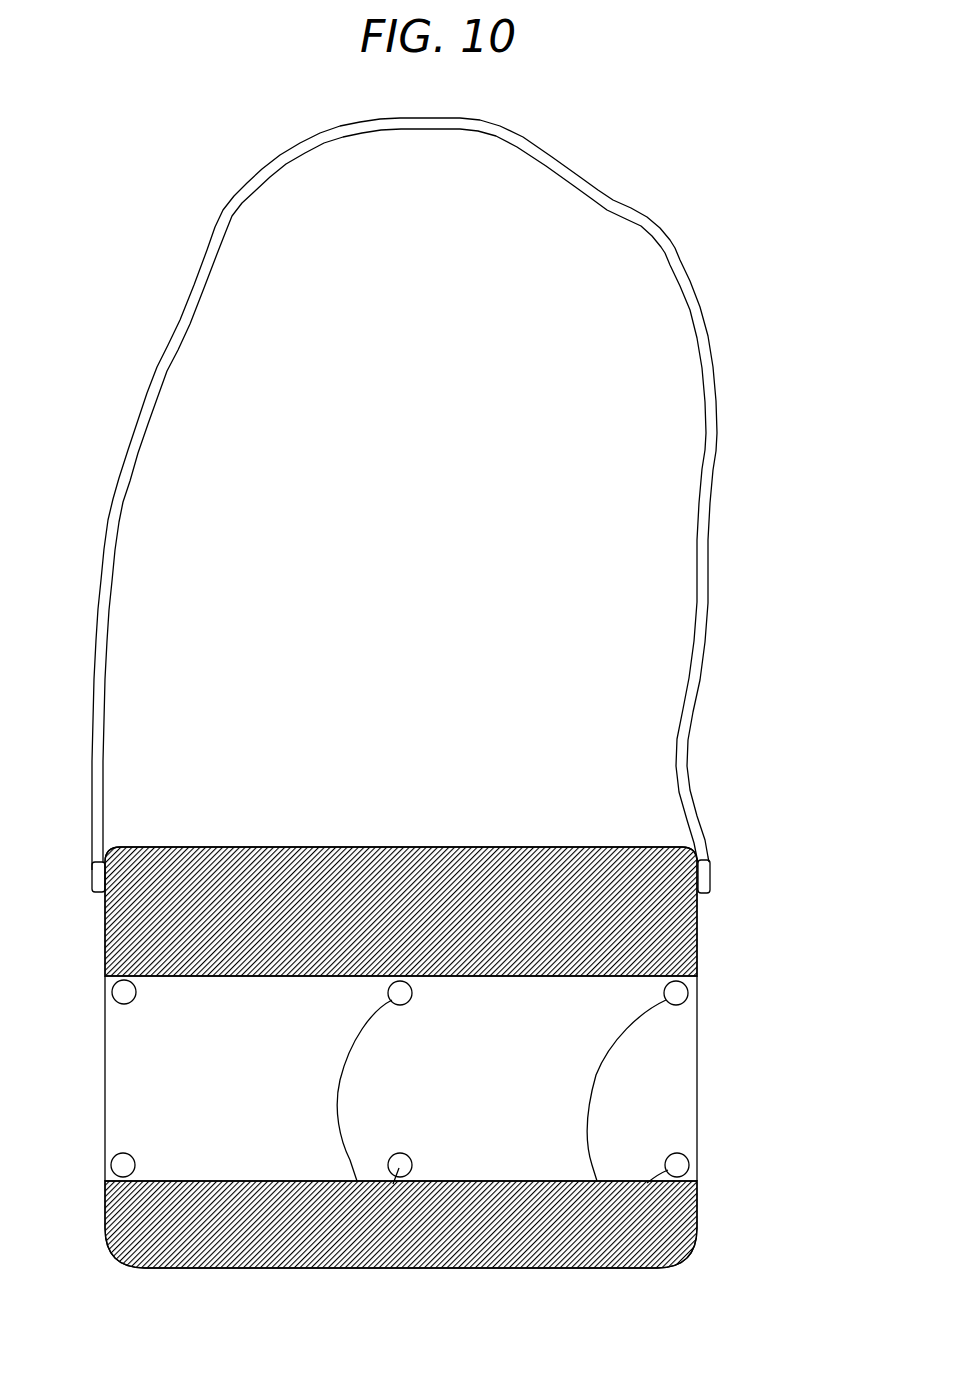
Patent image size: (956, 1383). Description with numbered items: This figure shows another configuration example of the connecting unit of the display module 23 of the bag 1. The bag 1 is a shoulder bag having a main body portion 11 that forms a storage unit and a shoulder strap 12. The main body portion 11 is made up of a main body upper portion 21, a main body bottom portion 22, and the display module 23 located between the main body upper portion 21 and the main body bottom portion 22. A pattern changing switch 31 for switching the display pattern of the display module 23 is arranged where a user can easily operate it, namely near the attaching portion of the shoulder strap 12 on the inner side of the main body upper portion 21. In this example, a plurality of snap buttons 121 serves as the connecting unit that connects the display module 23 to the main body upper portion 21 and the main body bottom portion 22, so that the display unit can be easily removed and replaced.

The bag 1 is at (782, 267).
The main body portion 11 is at (779, 905).
The shoulder strap 12 is at (702, 603).
The main body upper portion 21 is at (697, 930).
The main body bottom portion 22 is at (697, 1210).
The display module 23 is at (668, 1070).
The pattern changing switch 31 is at (104, 906).
The snap buttons 121 is at (113, 990).